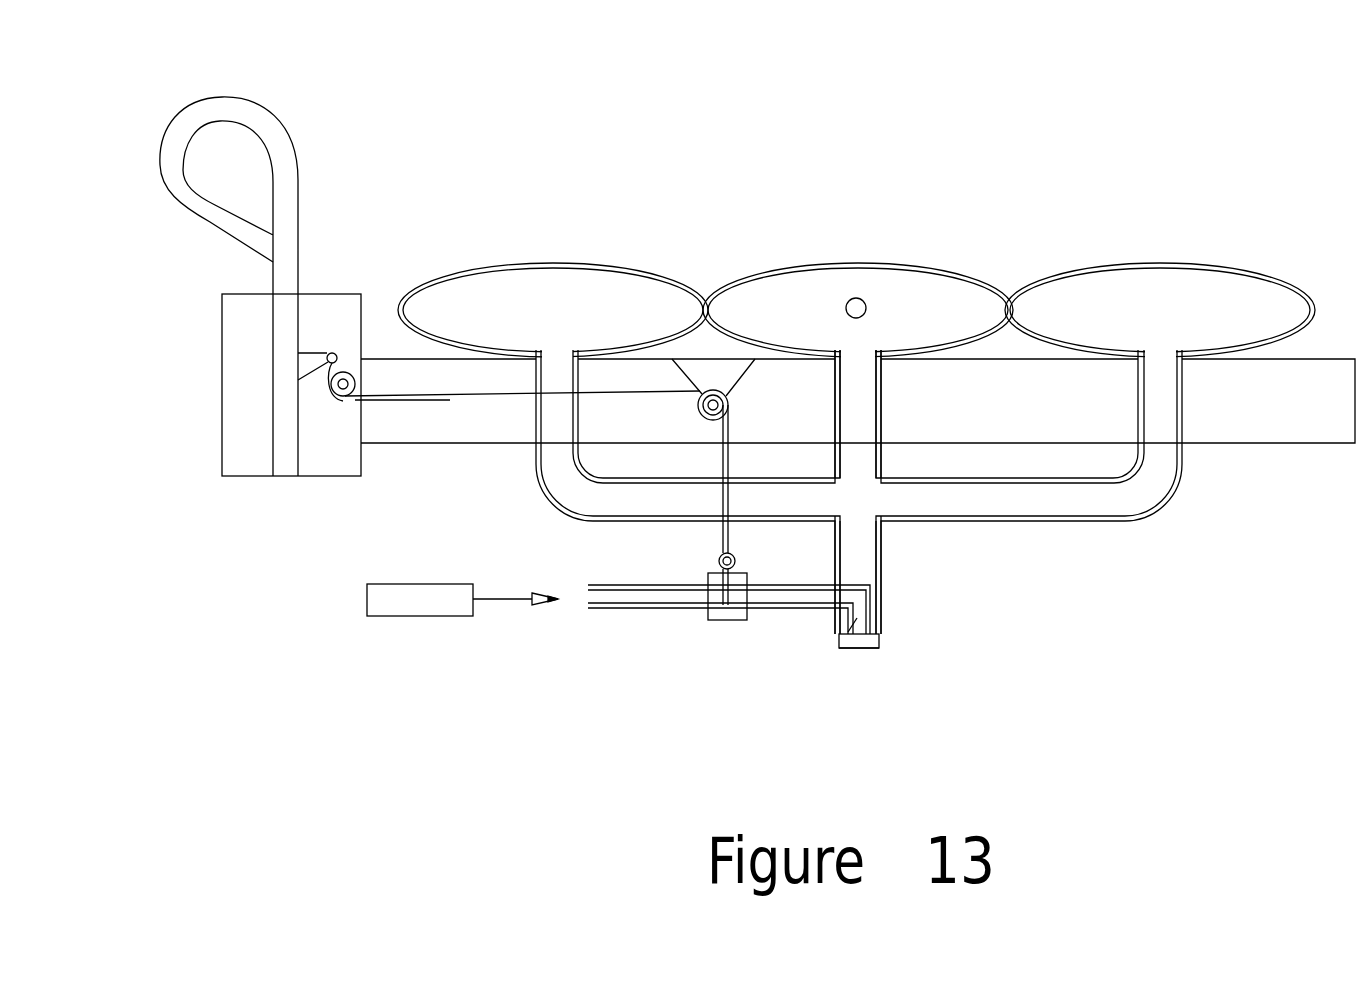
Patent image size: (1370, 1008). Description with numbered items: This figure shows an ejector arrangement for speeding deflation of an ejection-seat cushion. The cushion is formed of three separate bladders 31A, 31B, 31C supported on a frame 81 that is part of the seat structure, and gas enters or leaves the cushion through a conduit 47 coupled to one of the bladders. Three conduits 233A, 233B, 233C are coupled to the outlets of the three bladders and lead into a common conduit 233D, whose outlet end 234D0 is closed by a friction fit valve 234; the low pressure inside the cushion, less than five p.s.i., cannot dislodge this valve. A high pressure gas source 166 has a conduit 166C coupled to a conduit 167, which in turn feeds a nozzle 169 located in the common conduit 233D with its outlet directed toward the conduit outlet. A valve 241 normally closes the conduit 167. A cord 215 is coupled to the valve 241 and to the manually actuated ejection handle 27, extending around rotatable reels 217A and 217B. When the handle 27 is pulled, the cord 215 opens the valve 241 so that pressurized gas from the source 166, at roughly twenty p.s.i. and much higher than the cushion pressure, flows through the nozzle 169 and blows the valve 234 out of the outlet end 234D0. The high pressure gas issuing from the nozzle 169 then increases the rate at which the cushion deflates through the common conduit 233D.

The ejection handle 27 is at (275, 123).
The bladder 31A is at (555, 265).
The bladder 31B is at (860, 262).
The bladder 31C is at (1170, 262).
The conduit 47 is at (862, 299).
The frame 81 is at (1233, 443).
The cord 215 is at (448, 397).
The rotatable reel 217A is at (713, 392).
The rotatable reel 217B is at (330, 393).
The conduit 233A is at (550, 497).
The conduit 233B is at (880, 460).
The conduit 233C is at (1162, 497).
The common conduit 233D is at (880, 560).
The friction fit valve 234 is at (858, 647).
The outlet end 234D0 is at (882, 635).
The nozzle 169 is at (837, 637).
The valve 241 is at (717, 625).
The conduit 167 is at (627, 608).
The high pressure gas source 166 is at (367, 600).
The conduit 166C is at (515, 599).